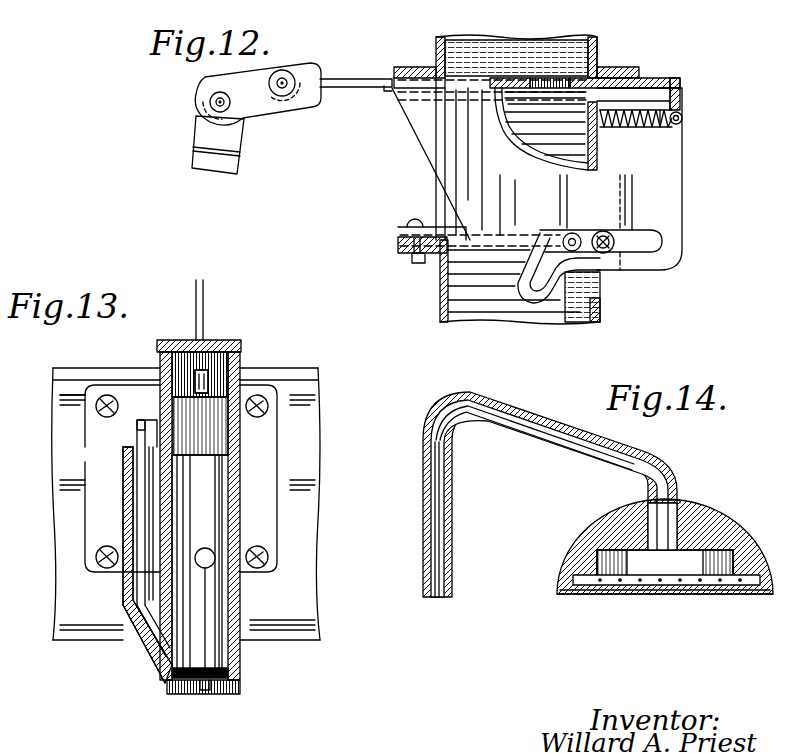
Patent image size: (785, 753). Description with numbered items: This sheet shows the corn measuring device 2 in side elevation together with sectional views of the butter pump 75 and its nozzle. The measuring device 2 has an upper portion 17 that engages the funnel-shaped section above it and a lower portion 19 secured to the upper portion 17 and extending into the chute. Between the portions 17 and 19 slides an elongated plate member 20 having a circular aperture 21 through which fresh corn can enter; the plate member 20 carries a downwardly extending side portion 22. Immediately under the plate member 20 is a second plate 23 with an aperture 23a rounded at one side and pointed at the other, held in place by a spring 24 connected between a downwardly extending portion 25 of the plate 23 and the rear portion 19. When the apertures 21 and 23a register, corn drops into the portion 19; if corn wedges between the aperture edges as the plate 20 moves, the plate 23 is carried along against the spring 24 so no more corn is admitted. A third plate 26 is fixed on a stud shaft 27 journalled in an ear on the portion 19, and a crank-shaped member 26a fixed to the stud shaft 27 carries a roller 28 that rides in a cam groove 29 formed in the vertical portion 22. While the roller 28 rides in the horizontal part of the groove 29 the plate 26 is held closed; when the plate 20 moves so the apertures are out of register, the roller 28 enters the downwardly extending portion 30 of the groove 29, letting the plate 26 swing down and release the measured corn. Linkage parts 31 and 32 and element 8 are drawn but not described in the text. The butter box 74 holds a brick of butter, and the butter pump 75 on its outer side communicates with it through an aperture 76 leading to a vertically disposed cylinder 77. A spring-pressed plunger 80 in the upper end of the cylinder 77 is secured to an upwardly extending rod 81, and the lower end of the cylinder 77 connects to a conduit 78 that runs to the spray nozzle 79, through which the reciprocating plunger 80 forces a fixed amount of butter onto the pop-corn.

In FIG. 12, the measuring device 2 is at (517, 68).
In FIG. 12, the upper portion of the measuring device 17 is at (593, 43).
In FIG. 12, the lower portion of the measuring device 19 is at (590, 150).
In FIG. 12, the slidable elongated plate member 20 is at (352, 80).
In FIG. 12, the circular aperture 21 is at (570, 80).
In FIG. 12, the downwardly extending side portion 22 is at (430, 137).
In FIG. 12, the second plate 23 is at (663, 84).
In FIG. 12, the aperture 23a is at (513, 92).
In FIG. 12, the spring 24 is at (680, 126).
In FIG. 12, the downwardly extending portion 25 is at (683, 115).
In FIG. 12, the third plate 26 is at (465, 242).
In FIG. 12, the crank-shaped member 26a is at (572, 233).
In FIG. 12, the stud shaft 27 is at (612, 252).
In FIG. 12, the roller 28 is at (580, 252).
In FIG. 12, the cam groove 29 is at (660, 242).
In FIG. 12, the downwardly extending portion of the cam groove 30 is at (515, 300).
In FIG. 12, the arm 31 is at (194, 144).
In FIG. 12, the lever 32 is at (255, 104).
In FIG. 13, the butter box 74 is at (305, 410).
In FIG. 13, the butter pump 75 is at (240, 344).
In FIG. 13, the aperture 76 is at (214, 555).
In FIG. 13, the cylinder 77 is at (222, 652).
In FIG. 13, the conduit 78 is at (134, 433).
In FIG. 14, the conduit 78 is at (538, 424).
In FIG. 14, the spray nozzle 79 is at (702, 504).
In FIG. 13, the body 8 is at (242, 477).
In FIG. 14, the body 8 is at (610, 518).
In FIG. 13, the spring-pressed plunger 80 is at (218, 418).
In FIG. 13, the rod 81 is at (207, 299).